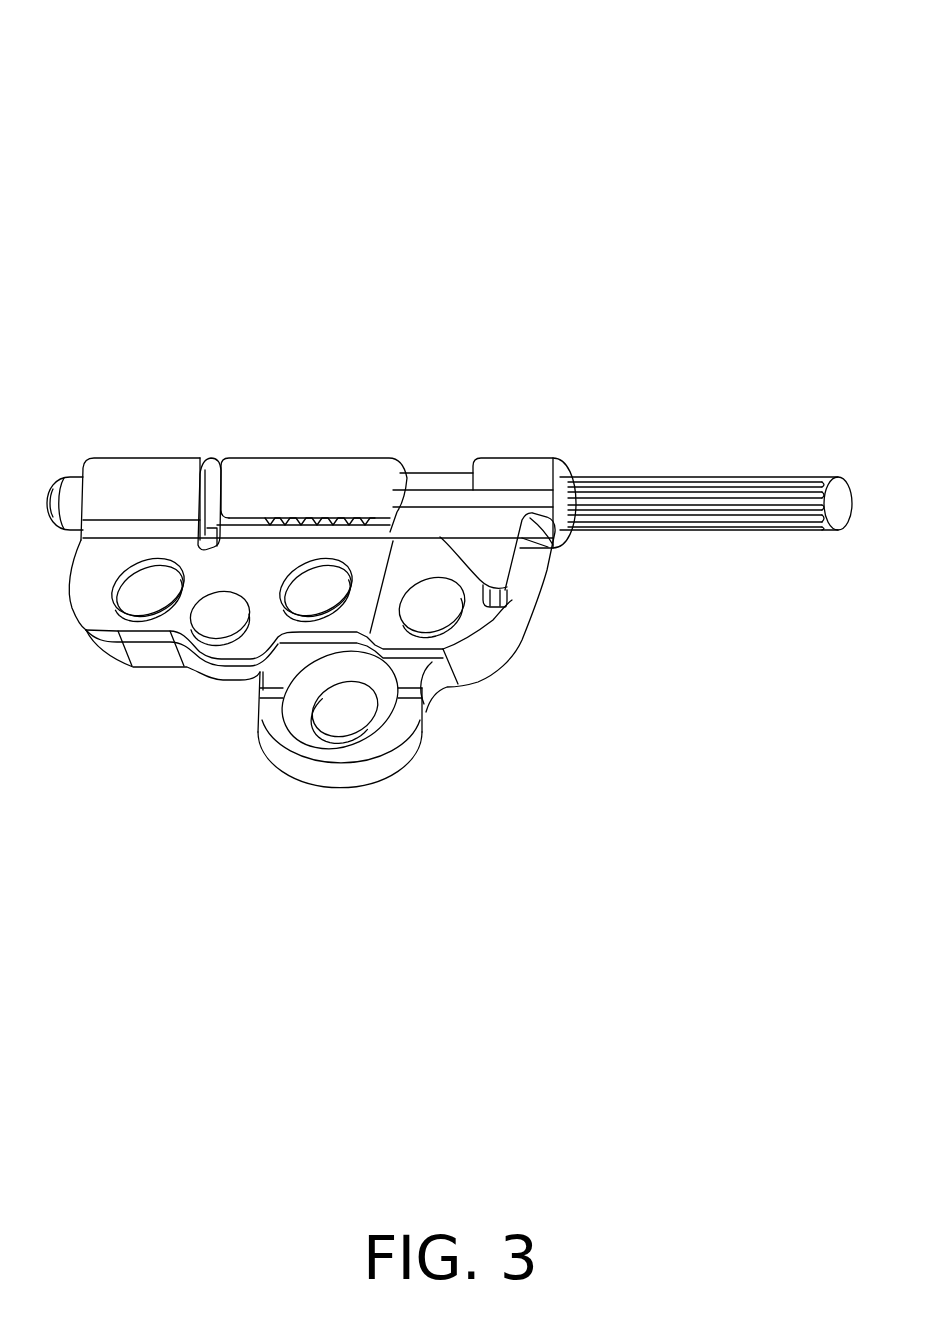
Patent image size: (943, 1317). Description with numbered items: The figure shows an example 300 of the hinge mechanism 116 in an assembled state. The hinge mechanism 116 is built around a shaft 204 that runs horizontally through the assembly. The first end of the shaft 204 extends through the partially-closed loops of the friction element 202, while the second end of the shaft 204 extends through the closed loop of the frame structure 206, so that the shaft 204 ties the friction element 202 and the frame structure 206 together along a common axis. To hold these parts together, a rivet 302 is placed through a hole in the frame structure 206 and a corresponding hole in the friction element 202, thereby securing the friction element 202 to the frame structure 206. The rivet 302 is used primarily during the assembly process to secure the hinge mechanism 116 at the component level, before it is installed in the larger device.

The example 300 is at (142, 60).
The hinge mechanism 116 is at (313, 410).
The friction element 202 is at (343, 545).
The shaft 204 is at (706, 522).
The frame structure 206 is at (529, 603).
The rivet 302 is at (216, 622).